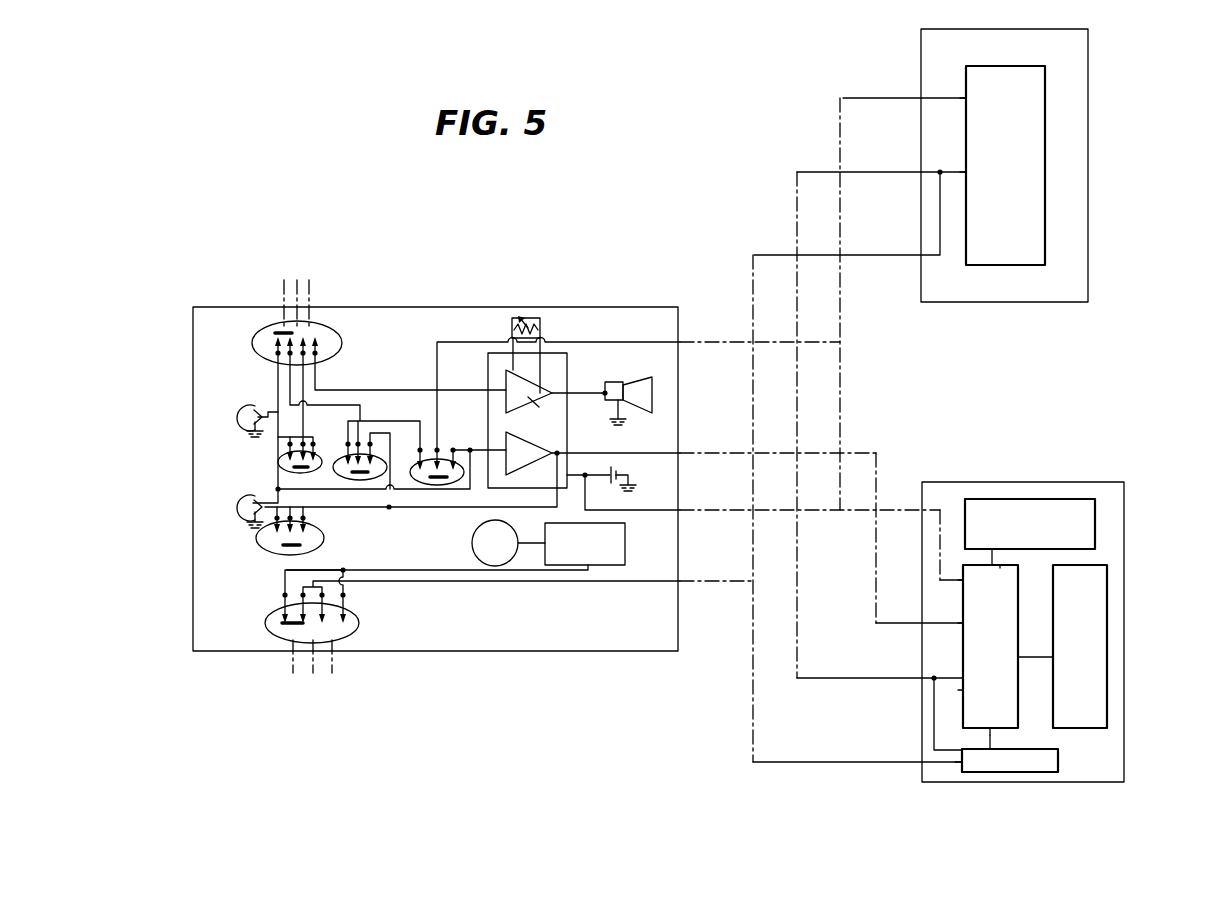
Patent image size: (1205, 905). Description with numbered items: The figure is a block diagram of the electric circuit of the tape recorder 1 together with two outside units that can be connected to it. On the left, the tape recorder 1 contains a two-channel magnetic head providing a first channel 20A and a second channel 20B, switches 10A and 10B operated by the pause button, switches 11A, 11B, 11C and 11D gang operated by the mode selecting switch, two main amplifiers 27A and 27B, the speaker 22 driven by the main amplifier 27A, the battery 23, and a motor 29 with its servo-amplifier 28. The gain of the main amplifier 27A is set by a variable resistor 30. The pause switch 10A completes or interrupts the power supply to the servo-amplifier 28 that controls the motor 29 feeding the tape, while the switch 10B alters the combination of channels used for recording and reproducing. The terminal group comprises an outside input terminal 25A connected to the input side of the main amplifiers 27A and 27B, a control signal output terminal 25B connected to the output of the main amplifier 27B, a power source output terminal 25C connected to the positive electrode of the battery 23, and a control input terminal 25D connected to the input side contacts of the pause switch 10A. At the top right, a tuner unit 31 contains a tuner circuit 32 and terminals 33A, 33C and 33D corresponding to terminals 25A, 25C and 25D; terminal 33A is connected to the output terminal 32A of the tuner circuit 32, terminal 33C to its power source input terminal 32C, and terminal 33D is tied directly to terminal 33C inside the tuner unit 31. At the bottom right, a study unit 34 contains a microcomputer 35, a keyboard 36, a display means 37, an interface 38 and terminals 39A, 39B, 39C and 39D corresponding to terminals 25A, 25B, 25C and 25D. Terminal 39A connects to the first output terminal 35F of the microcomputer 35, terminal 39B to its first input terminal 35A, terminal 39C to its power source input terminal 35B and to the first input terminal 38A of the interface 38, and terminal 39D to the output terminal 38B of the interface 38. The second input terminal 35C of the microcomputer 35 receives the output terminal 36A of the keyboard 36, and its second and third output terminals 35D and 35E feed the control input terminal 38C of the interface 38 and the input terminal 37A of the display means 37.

The tape recorder 1 is at (214, 306).
The pause switch 10A is at (352, 633).
The switch 10B is at (318, 332).
The switch 11A is at (284, 464).
The switch 11B is at (320, 540).
The switch 11C is at (334, 455).
The switch 11D is at (437, 480).
The first channel 20A is at (232, 418).
The second channel 20B is at (232, 515).
The speaker 22 is at (642, 385).
The battery 23 is at (613, 470).
The outside input terminal 25A is at (682, 342).
The control signal output terminal 25B is at (682, 454).
The power source output terminal 25C is at (682, 511).
The control input terminal 25D is at (682, 582).
The main amplifier 27A is at (555, 403).
The main amplifier 27B is at (506, 438).
The servo-amplifier 28 is at (612, 553).
The motor 29 is at (486, 562).
The variable resistor 30 is at (545, 330).
The tuner unit 31 is at (988, 305).
The tuner circuit 32 is at (1016, 216).
The output terminal 32A is at (962, 100).
The power source input terminal 32C is at (962, 175).
The terminal 33A is at (920, 97).
The terminal 33C is at (920, 174).
The terminal 33D is at (920, 257).
The study unit 34 is at (1020, 783).
The microcomputer 35 is at (1004, 649).
The first input terminal 35A is at (960, 622).
The power source input terminal 35B is at (960, 690).
The second input terminal 35C is at (1035, 657).
The second output terminal 35D is at (1000, 718).
The third output terminal 35E is at (1000, 568).
The first output terminal 35F is at (960, 580).
The keyboard 36 is at (1094, 649).
The output terminal 36A is at (1050, 670).
The display means 37 is at (1036, 539).
The input terminal 37A is at (995, 552).
The interface 38 is at (1060, 760).
The first input terminal 38A is at (955, 748).
The output terminal 38B is at (958, 766).
The second input terminal 38C is at (993, 744).
The terminal 39A is at (938, 510).
The terminal 39B is at (905, 624).
The terminal 39C is at (905, 679).
The terminal 39D is at (900, 774).